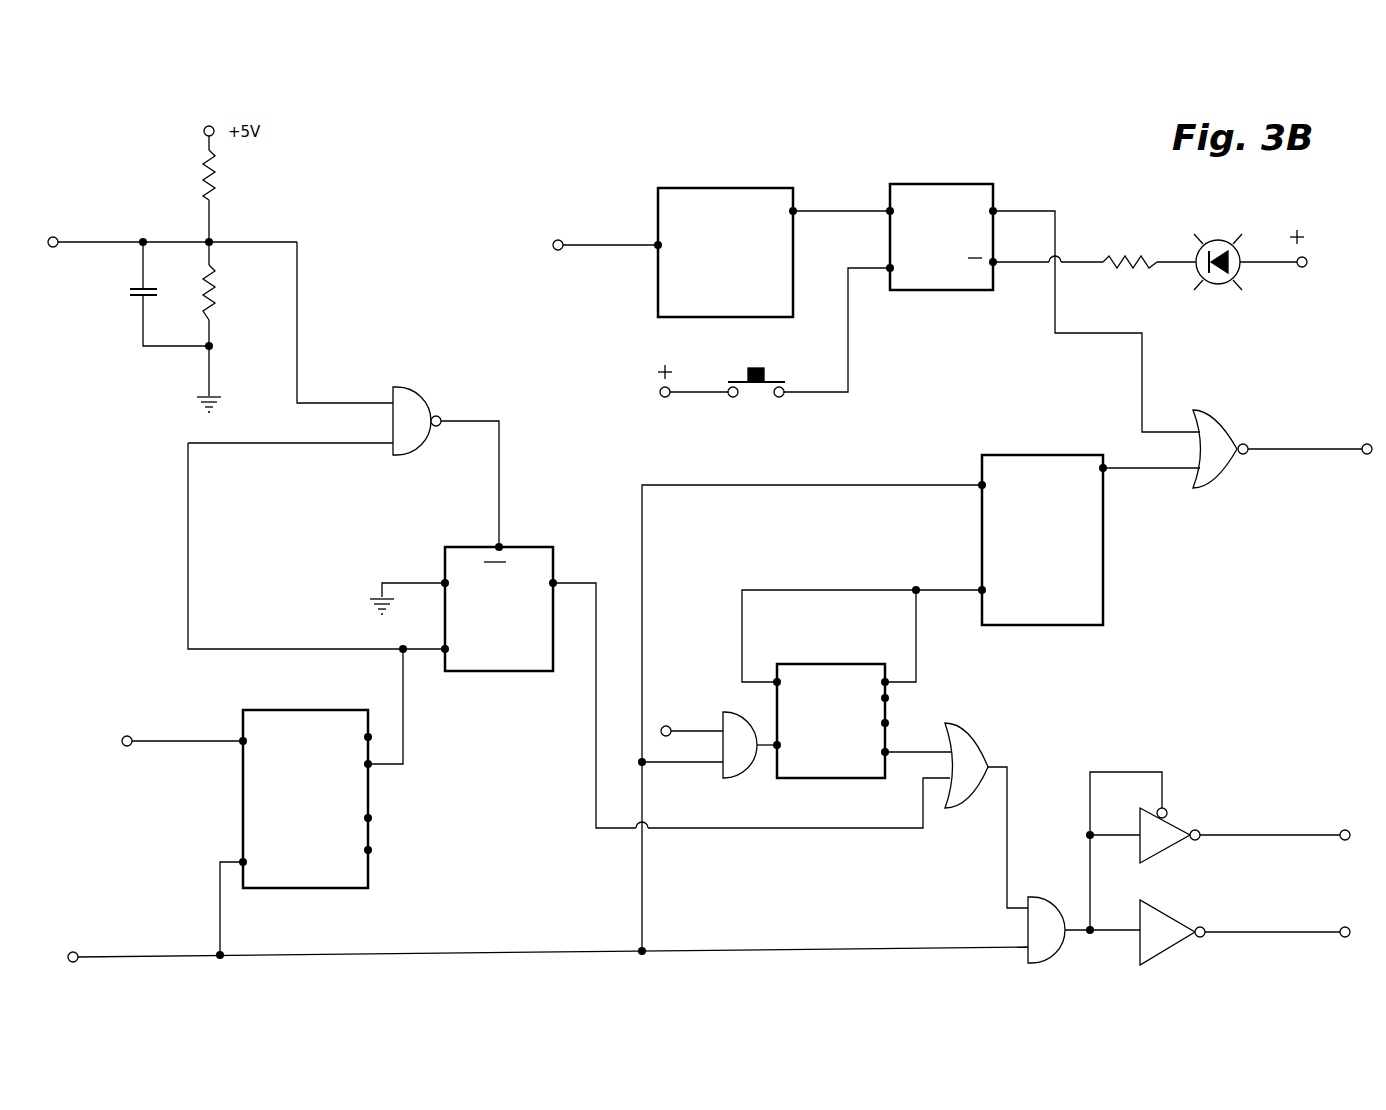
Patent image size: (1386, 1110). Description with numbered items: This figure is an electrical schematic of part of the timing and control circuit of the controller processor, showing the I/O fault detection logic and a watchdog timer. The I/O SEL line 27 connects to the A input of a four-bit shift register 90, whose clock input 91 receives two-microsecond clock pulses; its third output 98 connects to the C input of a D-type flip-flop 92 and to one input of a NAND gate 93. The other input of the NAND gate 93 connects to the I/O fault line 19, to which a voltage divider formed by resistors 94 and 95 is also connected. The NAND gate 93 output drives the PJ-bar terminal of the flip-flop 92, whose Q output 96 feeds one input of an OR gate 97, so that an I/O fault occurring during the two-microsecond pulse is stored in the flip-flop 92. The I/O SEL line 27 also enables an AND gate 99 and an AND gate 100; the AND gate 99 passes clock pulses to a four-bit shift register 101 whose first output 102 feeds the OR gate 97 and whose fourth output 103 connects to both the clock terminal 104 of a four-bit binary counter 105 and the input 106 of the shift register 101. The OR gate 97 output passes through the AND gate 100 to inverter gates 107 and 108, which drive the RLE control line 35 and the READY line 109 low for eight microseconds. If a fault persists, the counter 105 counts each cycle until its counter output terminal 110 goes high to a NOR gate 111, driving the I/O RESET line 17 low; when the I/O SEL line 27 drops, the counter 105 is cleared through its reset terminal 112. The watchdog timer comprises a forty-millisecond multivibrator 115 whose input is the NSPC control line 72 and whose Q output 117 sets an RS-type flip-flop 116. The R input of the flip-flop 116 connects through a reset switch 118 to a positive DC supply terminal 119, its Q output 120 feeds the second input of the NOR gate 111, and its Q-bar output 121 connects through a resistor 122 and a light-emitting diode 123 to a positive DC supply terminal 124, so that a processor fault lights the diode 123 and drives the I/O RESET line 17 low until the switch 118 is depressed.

The I/O fault line 19 is at (53, 237).
The resistor 94 is at (215, 175).
The resistor 95 is at (215, 310).
The NAND gate 93 is at (418, 387).
The D-type flip-flop 92 is at (522, 626).
The Q output 96 is at (560, 580).
The four-bit shift register 90 is at (378, 882).
The clock input 91 is at (241, 740).
The third output 98 is at (372, 766).
The I/O SEL line 27 is at (74, 951).
The NSPC control line 72 is at (558, 240).
The 40 millisecond multivibrator 115 is at (725, 188).
The Q output 117 is at (797, 210).
The RS-type flip-flop 116 is at (970, 184).
The reset switch 118 is at (760, 397).
The positive DC supply terminal 119 is at (660, 395).
The Q output 120 is at (997, 211).
The Q-bar output 121 is at (998, 266).
The resistor 122 is at (1130, 258).
The light-emitting diode 123 is at (1226, 241).
The positive DC supply terminal 124 is at (1302, 268).
The NOR gate 111 is at (1232, 418).
The I/O RESET line 17 is at (1364, 455).
The counter output terminal 110 is at (1106, 474).
The four-bit binary counter 105 is at (1104, 592).
The reset terminal 112 is at (980, 483).
The clock terminal 104 is at (980, 588).
The four-bit shift register 101 is at (826, 664).
The input 106 is at (775, 684).
The fourth output 103 is at (886, 679).
The first output 102 is at (888, 750).
The AND gate 99 is at (726, 776).
The OR gate 97 is at (984, 747).
The AND gate 100 is at (1062, 952).
The inverter gate 108 is at (1168, 854).
The READY line 109 is at (1346, 829).
The inverter gate 107 is at (1184, 946).
The RLE control line 35 is at (1346, 926).